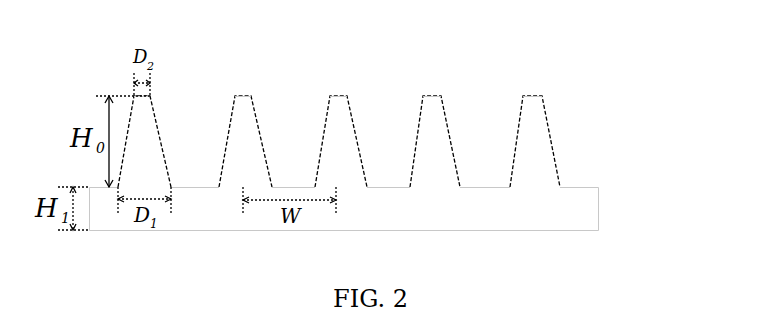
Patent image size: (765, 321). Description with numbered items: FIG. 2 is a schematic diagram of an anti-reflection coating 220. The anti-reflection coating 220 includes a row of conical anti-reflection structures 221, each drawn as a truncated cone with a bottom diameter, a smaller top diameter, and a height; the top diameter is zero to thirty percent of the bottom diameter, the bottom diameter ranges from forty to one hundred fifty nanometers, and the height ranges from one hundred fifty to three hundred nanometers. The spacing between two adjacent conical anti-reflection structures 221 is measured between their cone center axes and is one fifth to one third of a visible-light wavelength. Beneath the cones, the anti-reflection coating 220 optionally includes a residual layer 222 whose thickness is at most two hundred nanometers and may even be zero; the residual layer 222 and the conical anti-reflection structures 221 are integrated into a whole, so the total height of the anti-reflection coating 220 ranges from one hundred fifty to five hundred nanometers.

The anti-reflection coating 220 is at (380, 120).
The conical anti-reflection structure 221 is at (533, 134).
The residual layer 222 is at (533, 209).